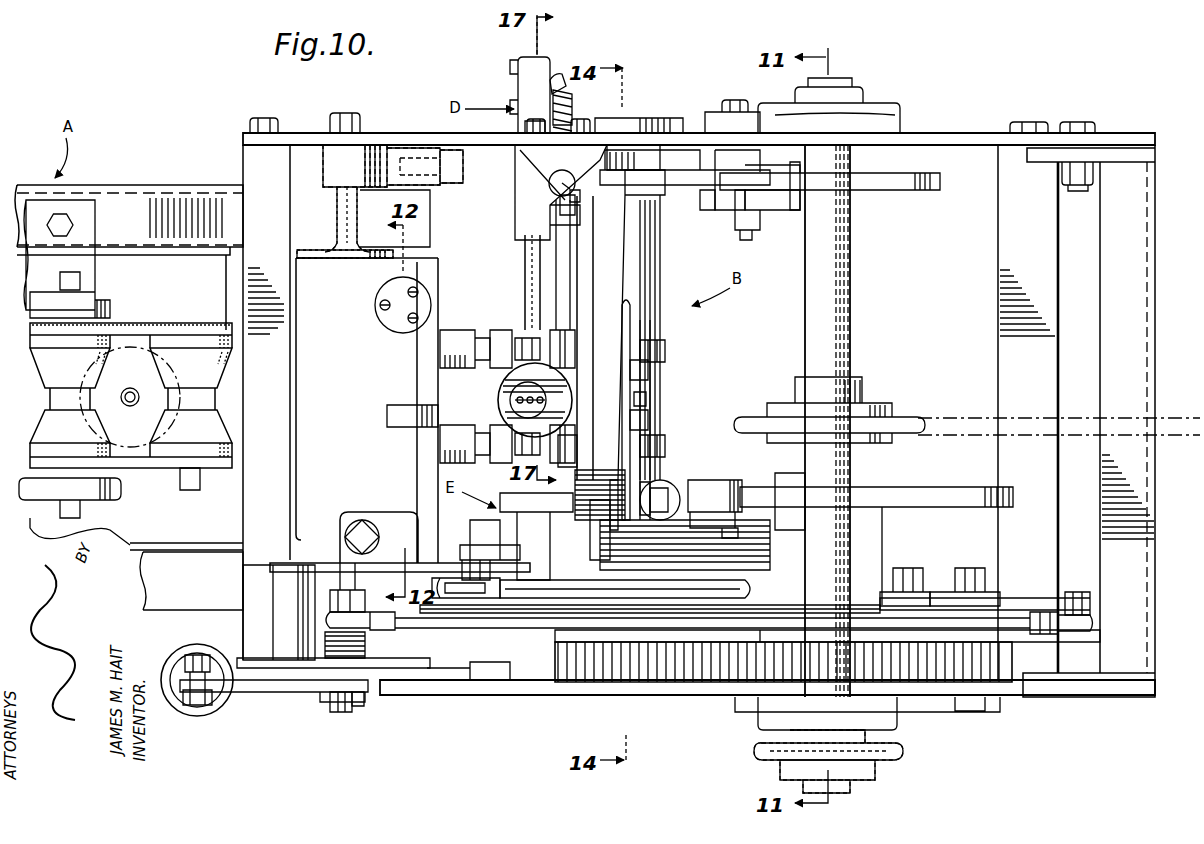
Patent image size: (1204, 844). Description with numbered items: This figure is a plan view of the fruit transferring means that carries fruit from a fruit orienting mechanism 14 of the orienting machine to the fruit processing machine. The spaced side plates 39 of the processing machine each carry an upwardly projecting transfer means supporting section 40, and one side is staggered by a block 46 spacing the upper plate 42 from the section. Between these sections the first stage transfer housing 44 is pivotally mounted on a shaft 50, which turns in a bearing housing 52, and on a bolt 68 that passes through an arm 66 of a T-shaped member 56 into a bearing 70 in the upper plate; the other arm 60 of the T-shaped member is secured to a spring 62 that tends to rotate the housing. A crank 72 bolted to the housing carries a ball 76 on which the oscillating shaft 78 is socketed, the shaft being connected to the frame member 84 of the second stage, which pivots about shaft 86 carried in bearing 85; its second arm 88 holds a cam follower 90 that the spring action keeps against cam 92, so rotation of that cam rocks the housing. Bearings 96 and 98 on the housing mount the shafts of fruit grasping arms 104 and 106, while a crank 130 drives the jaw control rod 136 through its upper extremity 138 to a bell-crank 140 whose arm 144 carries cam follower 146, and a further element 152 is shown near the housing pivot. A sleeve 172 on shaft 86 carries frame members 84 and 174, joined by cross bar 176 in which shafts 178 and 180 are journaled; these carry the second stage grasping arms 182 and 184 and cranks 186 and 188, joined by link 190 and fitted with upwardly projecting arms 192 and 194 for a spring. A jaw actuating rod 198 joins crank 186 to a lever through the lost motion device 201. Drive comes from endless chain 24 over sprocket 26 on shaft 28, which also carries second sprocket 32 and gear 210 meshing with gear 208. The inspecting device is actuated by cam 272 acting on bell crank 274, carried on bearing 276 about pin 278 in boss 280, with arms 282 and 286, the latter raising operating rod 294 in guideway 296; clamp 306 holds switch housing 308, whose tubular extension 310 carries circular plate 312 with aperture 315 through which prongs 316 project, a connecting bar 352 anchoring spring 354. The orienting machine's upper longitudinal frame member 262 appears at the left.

The fruit orienting mechanism 14 is at (45, 462).
The endless chain 24 is at (1130, 418).
The sprocket 26 is at (905, 418).
The shaft 28 is at (835, 247).
The second sprocket 32 is at (895, 752).
The side plates 39 is at (1138, 133).
The transfer means supporting section 40 is at (421, 133).
The upper plate 42 is at (420, 668).
The first stage transfer means housing 44 is at (330, 470).
The block 46 is at (480, 676).
The shaft 50 is at (337, 212).
The bearing housing 52 is at (326, 167).
The T-shaped member 56 is at (265, 598).
The arm 60 is at (258, 692).
The spring 62 is at (220, 712).
The arm 66 is at (358, 706).
The bolt 68 is at (335, 712).
The bearing 70 is at (358, 648).
The crank 72 is at (448, 573).
The ball 76 is at (470, 598).
The oscillating shaft 78 is at (540, 598).
The frame member 84 is at (598, 530).
The bearing 85 is at (625, 148).
The shaft 86 is at (650, 180).
The second arm 88 is at (720, 545).
The cam follower 90 is at (722, 480).
The cam 92 is at (955, 487).
The fruit grasping arm support bearing 96 is at (448, 447).
The fruit grasping arm support bearing 98 is at (455, 330).
The fruit grasping arm 104 is at (494, 433).
The fruit grasping arm 106 is at (497, 330).
The crank 130 is at (372, 603).
The jaw control rod 136 is at (548, 613).
The upper extremity of jaw control rod 138 is at (330, 621).
The bell-crank 140 is at (1012, 598).
The arm 144 is at (932, 590).
The cam follower 146 is at (893, 590).
The clevis 152 is at (345, 600).
The sleeve 172 is at (656, 275).
The frame member 174 is at (582, 268).
The cross bar 176 is at (598, 388).
The shaft 178 is at (660, 448).
The shaft 180 is at (662, 351).
The fruit grasping arm 182 is at (572, 445).
The fruit grasping arm 184 is at (567, 330).
The crank 186 is at (648, 417).
The crank 188 is at (648, 373).
The link 190 is at (648, 399).
The upwardly projecting arm 192 is at (612, 520).
The upwardly projecting arm 194 is at (626, 330).
The jaw actuating rod 198 is at (662, 480).
The lost motion device 201 is at (668, 490).
The gear 208 is at (612, 697).
The gear 210 is at (720, 684).
The upper U-shaped longitudinal frame member 262 is at (191, 581).
The cam 272 is at (928, 190).
The bell crank 274 is at (700, 212).
The bearing 276 is at (737, 215).
The pin 278 is at (732, 100).
The boss 280 is at (712, 115).
The arm 282 is at (760, 212).
The arm 286 is at (682, 192).
The inspecting device operating rod 294 is at (582, 196).
The guideway 296 is at (528, 165).
The clamp 306 is at (572, 213).
The inspecting device switch housing 308 is at (518, 88).
The hollow tubular extension 310 is at (527, 262).
The circular plate 312 is at (505, 382).
The aperture 315 is at (512, 398).
The prongs 316 is at (518, 403).
The connecting bar 352 is at (560, 78).
The spring 354 is at (572, 106).